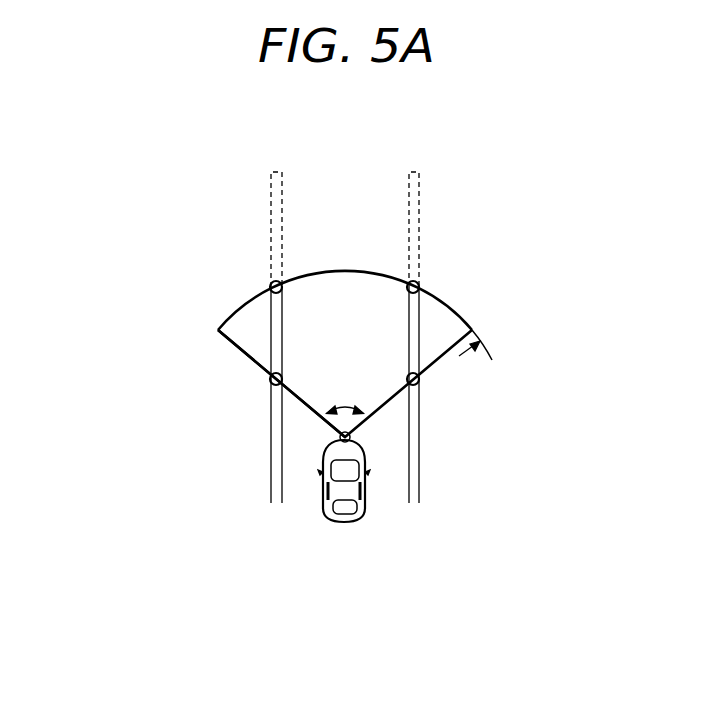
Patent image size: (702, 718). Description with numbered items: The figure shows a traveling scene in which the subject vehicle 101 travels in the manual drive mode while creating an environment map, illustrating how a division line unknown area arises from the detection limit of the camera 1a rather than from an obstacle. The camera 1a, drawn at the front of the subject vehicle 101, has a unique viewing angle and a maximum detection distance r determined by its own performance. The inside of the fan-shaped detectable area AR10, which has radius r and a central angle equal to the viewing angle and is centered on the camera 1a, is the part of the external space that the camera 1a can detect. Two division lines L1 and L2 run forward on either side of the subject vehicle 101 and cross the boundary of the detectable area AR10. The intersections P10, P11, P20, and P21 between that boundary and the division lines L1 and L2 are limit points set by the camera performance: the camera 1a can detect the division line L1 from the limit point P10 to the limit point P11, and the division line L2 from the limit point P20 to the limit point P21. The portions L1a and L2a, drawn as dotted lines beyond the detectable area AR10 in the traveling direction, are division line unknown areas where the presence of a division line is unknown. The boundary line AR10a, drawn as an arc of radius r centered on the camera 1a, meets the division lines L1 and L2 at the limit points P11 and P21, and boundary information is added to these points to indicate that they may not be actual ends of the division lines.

The detectable area AR10 is at (360, 282).
The boundary line AR10a is at (214, 326).
The division line L1 is at (284, 321).
The division line unknown area L1a is at (270, 203).
The division line L2 is at (408, 350).
The division line unknown area L2a is at (420, 205).
The limit point P11 is at (270, 286).
The limit point P21 is at (419, 285).
The limit point P10 is at (270, 381).
The limit point P20 is at (420, 382).
The maximum detection distance r is at (475, 351).
The camera 1a is at (339, 437).
The subject vehicle 101 is at (345, 523).